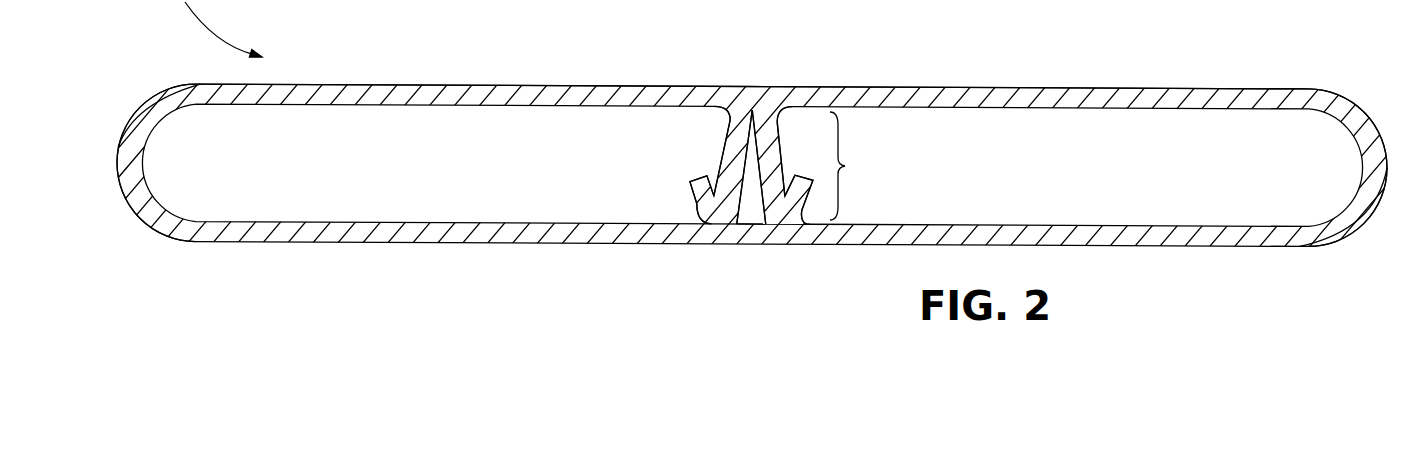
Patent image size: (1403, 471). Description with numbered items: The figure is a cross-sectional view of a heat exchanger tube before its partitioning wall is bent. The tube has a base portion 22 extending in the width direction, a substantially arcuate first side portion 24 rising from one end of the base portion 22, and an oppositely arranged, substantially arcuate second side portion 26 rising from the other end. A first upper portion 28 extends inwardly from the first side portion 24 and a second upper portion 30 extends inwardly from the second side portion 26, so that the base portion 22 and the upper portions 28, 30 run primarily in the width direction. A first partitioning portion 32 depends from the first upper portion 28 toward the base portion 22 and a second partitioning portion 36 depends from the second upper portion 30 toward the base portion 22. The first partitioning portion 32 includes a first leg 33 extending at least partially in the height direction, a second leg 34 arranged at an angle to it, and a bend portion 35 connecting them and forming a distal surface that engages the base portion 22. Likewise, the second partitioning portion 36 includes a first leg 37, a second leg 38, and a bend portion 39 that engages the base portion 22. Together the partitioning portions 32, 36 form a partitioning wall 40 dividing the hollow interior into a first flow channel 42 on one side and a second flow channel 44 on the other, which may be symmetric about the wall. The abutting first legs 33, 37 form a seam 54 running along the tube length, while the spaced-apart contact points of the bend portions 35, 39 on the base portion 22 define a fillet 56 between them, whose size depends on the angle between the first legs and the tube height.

The base portion 22 is at (578, 244).
The first side portion 24 is at (138, 130).
The second side portion 26 is at (1362, 140).
The first upper portion 28 is at (514, 86).
The second upper portion 30 is at (937, 87).
The first partitioning portion 32 is at (712, 160).
The first leg 33 is at (731, 157).
The second leg 34 is at (690, 185).
The bend portion 35 is at (712, 224).
The second partitioning portion 36 is at (792, 159).
The first leg 37 is at (779, 140).
The second leg 38 is at (799, 208).
The bend portion 39 is at (775, 219).
The partitioning wall 40 is at (853, 166).
The first flow channel 42 is at (398, 183).
The second flow channel 44 is at (1078, 186).
The seam 54 is at (748, 104).
The fillet 56 is at (750, 222).